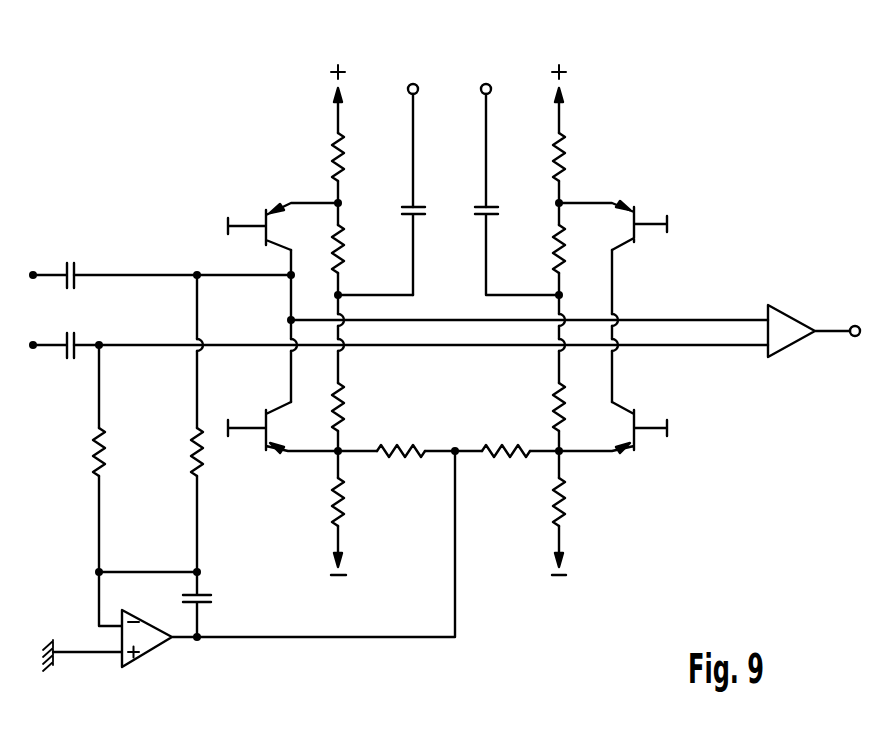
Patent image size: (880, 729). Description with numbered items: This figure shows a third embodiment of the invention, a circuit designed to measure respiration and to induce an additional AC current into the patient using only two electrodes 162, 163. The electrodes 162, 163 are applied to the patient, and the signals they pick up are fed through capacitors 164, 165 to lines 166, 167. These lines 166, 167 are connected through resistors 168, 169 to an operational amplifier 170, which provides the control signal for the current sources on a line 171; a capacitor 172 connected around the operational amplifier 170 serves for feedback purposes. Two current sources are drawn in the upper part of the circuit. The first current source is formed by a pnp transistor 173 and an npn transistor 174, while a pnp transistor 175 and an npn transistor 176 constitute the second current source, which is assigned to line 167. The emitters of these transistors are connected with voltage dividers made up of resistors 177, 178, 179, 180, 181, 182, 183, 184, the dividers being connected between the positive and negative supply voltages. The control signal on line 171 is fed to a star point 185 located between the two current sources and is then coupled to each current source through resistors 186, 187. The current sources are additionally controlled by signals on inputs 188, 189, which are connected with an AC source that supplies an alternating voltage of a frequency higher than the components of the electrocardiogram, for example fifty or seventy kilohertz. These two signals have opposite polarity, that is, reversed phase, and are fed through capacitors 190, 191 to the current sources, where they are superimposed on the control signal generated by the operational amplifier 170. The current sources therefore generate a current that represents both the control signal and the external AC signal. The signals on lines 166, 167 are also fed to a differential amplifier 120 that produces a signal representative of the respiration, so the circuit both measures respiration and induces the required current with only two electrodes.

The comparator amplifier 120 is at (792, 325).
The electrode 162 is at (34, 268).
The electrode 163 is at (34, 350).
The capacitor 164 is at (78, 268).
The capacitor 165 is at (78, 343).
The line 166 is at (166, 270).
The line 167 is at (455, 349).
The resistor 168 is at (92, 460).
The resistor 169 is at (190, 456).
The operational amplifier 170 is at (150, 645).
The line 171 is at (372, 640).
The capacitor 172 is at (204, 605).
The pnp transistor 173 is at (282, 208).
The npn transistor 174 is at (275, 468).
The pnp transistor 175 is at (628, 210).
The npn transistor 176 is at (630, 456).
The resistor 177 is at (346, 160).
The resistor 178 is at (348, 243).
The resistor 179 is at (348, 401).
The resistor 180 is at (346, 522).
The resistor 181 is at (567, 152).
The resistor 182 is at (552, 245).
The resistor 183 is at (552, 404).
The resistor 184 is at (567, 522).
The star point 185 is at (455, 447).
The resistor 186 is at (395, 456).
The resistor 187 is at (503, 456).
The input 188 is at (416, 84).
The input 189 is at (489, 84).
The capacitor 190 is at (418, 205).
The capacitor 191 is at (490, 205).